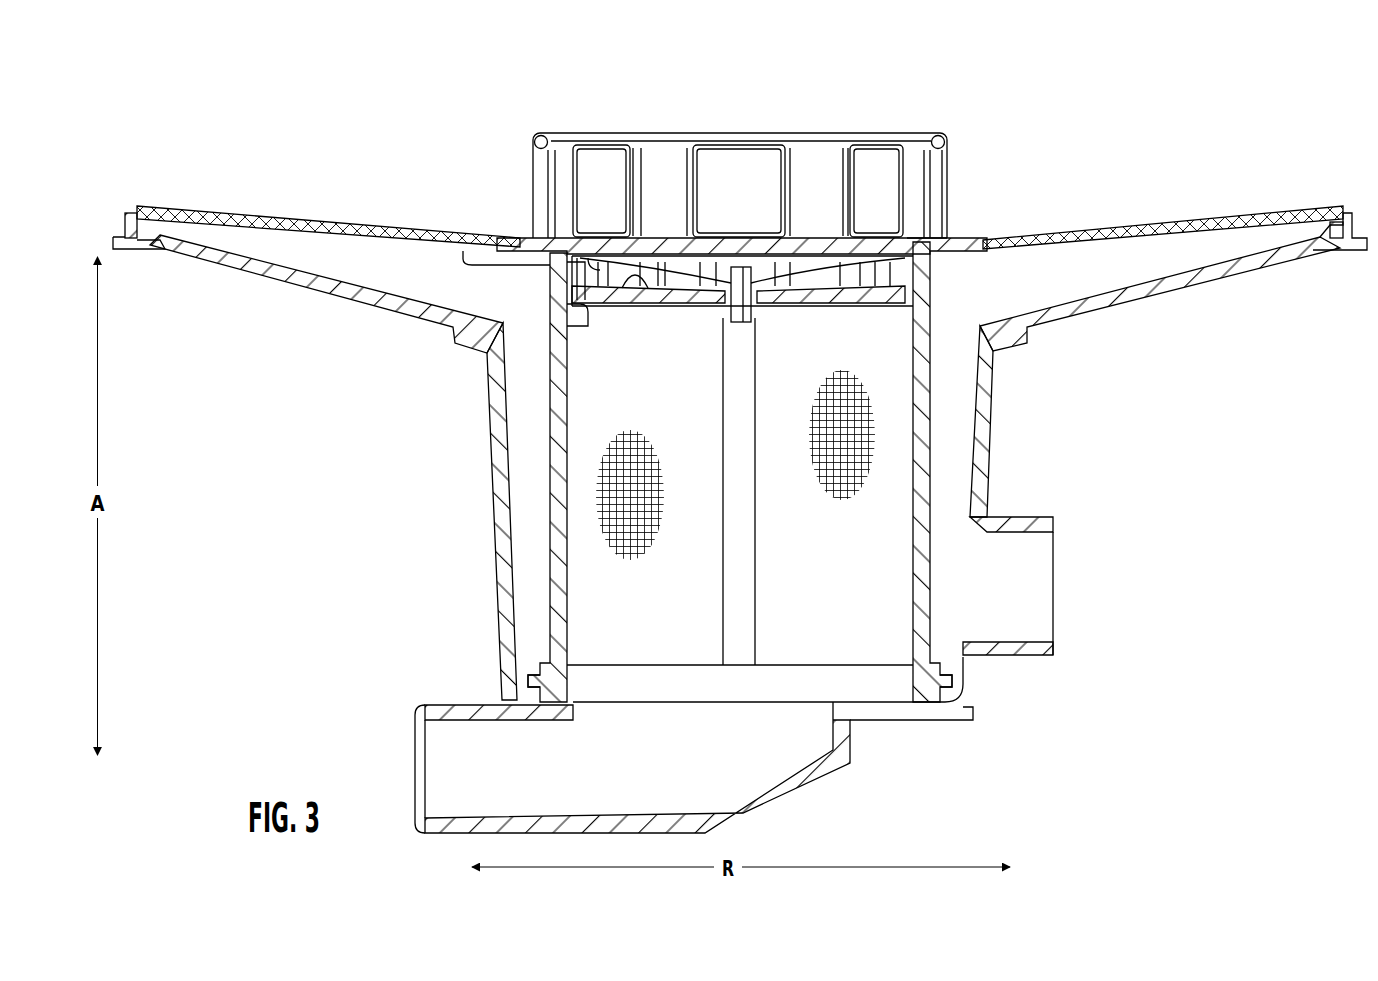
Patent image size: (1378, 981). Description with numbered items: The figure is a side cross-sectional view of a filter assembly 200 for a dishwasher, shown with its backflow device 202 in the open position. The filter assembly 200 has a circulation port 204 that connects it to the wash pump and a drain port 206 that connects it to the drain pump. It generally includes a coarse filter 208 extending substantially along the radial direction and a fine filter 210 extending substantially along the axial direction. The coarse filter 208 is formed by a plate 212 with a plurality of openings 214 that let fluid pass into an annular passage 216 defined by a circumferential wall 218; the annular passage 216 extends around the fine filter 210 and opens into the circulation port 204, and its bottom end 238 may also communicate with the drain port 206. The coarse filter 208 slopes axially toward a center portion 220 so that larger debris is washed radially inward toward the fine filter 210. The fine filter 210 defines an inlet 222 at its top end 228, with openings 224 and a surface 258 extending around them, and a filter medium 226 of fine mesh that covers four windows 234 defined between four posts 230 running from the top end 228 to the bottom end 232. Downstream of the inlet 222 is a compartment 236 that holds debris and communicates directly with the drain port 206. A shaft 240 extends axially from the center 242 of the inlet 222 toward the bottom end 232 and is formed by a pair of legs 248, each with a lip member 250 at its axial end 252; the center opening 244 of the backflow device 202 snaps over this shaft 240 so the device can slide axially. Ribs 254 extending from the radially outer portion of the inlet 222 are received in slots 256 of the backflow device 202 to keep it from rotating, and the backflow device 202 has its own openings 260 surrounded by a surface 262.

The filter assembly 200 is at (196, 79).
The backflow device 202 is at (985, 346).
The circulation port 204 is at (1046, 616).
The drain port 206 is at (392, 751).
The coarse filter 208 is at (1188, 172).
The fine filter 210 is at (462, 139).
The plate 212 is at (1260, 212).
The openings 214 is at (1123, 216).
The annular passage 216 is at (529, 481).
The circumferential wall 218 is at (494, 458).
The center portion 220 is at (504, 104).
The inlet 222 is at (824, 187).
The openings 224 is at (873, 237).
The filter medium 226 is at (881, 420).
The top end 228 is at (981, 212).
The posts 230 is at (921, 480).
The bottom end 232 is at (949, 656).
The windows 234 is at (894, 522).
The compartment 236 is at (599, 424).
The bottom end 238 is at (531, 663).
The shaft 240 is at (759, 276).
The center 242 is at (697, 281).
The center opening 244 is at (721, 316).
The legs 248 is at (703, 235).
The lip member 250 is at (756, 305).
The axial end 252 is at (746, 330).
The ribs 254 is at (578, 274).
The slots 256 is at (548, 322).
The surface 258 is at (740, 238).
The openings 260 is at (645, 280).
The surface 262 is at (626, 284).